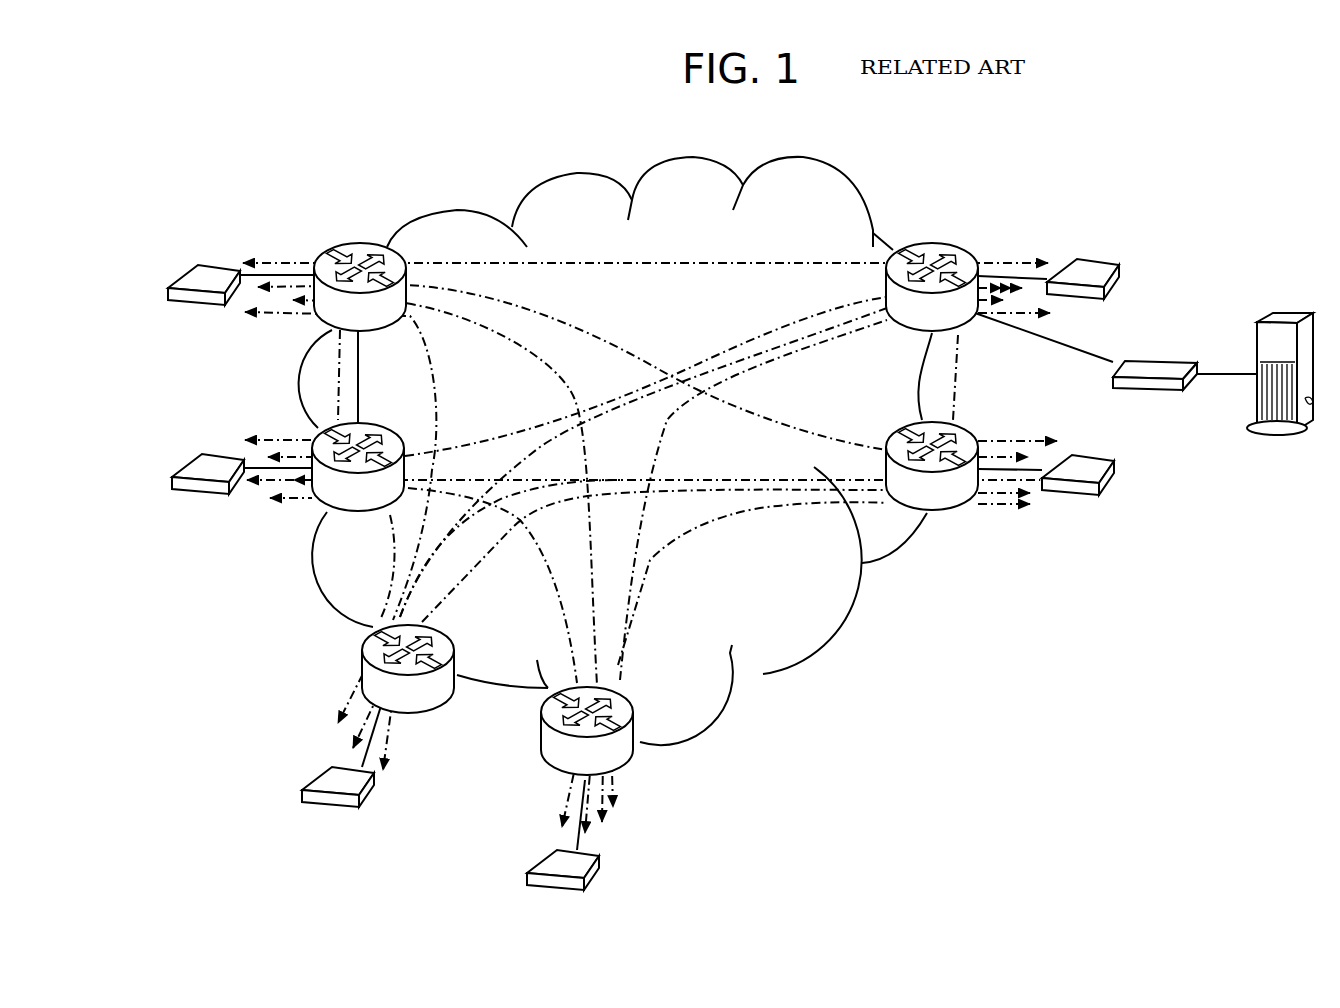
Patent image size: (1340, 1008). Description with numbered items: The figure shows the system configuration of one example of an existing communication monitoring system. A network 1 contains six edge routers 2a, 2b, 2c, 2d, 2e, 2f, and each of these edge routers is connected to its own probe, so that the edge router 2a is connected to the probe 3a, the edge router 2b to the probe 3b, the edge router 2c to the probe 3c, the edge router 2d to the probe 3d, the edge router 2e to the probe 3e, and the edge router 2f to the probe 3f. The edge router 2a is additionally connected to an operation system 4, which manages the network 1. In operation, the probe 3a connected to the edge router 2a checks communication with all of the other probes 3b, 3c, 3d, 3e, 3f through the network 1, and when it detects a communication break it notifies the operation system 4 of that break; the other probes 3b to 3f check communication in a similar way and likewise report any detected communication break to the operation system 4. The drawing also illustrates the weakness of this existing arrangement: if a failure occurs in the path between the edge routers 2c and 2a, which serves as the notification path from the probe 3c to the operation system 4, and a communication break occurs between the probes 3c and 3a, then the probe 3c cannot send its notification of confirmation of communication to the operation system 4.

The network 1 is at (588, 172).
The edge router 2a is at (937, 246).
The edge router 2b is at (950, 513).
The edge router 2c is at (352, 246).
The edge router 2d is at (318, 430).
The edge router 2e is at (428, 713).
The edge router 2f is at (625, 772).
The probe 3a is at (1100, 258).
The probe 3b is at (1078, 494).
The probe 3c is at (198, 305).
The probe 3d is at (183, 462).
The probe 3e is at (330, 803).
The probe 3f is at (540, 858).
The operation system 4 is at (1300, 312).